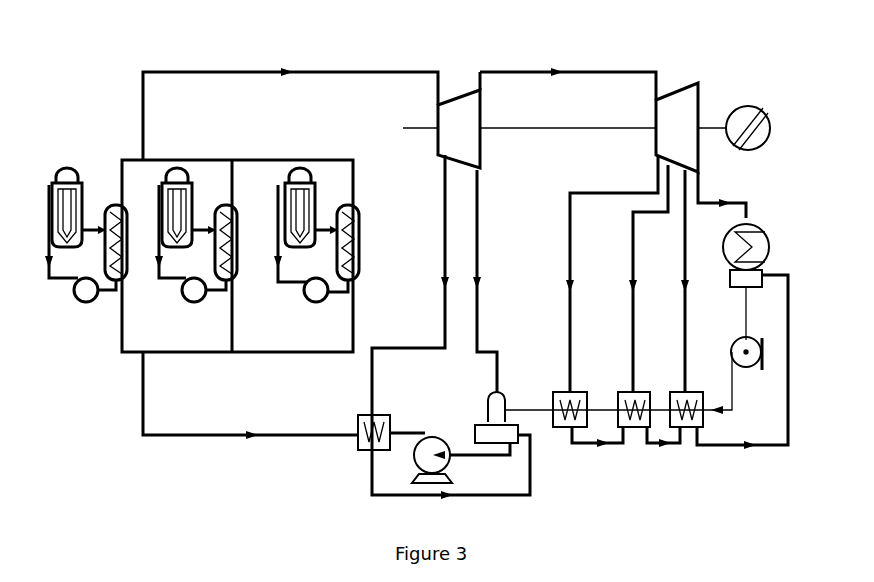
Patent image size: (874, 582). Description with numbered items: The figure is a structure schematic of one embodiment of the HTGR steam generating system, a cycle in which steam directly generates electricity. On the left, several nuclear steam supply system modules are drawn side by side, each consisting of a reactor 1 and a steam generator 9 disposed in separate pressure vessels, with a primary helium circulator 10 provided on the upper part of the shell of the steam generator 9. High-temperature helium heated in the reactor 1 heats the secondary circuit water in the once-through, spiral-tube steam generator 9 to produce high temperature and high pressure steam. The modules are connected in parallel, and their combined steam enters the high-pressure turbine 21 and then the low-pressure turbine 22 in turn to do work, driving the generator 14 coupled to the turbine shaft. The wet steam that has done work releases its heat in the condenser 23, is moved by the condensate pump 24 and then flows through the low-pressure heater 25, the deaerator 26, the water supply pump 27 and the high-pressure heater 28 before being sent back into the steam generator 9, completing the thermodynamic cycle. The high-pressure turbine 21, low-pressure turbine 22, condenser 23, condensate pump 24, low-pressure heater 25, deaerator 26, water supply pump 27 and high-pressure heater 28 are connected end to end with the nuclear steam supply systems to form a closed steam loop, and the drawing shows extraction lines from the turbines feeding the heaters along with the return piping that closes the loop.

The reactor 1 is at (60, 178).
The steam generator 9 is at (113, 207).
The primary helium circulator 10 is at (72, 285).
The generator 14 is at (737, 112).
The high-pressure turbine 21 is at (465, 95).
The low-pressure turbine 22 is at (655, 115).
The condenser 23 is at (766, 248).
The condensate pump 24 is at (733, 337).
The low-pressure heater 25 is at (560, 392).
The deaerator 26 is at (493, 393).
The water supply pump 27 is at (437, 435).
The high-pressure heater 28 is at (358, 442).